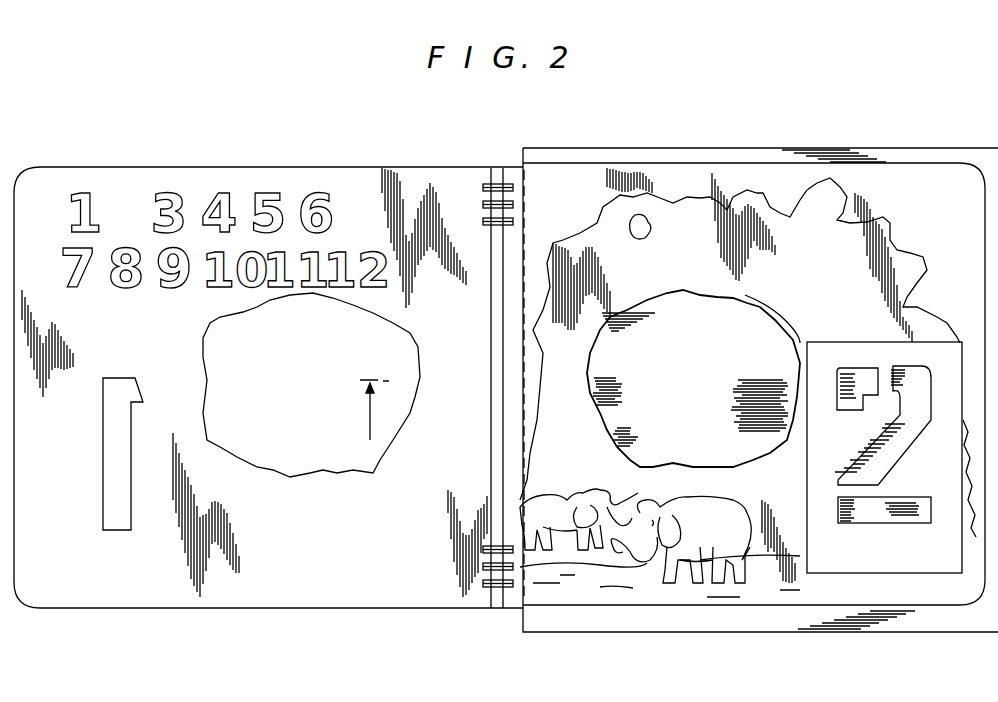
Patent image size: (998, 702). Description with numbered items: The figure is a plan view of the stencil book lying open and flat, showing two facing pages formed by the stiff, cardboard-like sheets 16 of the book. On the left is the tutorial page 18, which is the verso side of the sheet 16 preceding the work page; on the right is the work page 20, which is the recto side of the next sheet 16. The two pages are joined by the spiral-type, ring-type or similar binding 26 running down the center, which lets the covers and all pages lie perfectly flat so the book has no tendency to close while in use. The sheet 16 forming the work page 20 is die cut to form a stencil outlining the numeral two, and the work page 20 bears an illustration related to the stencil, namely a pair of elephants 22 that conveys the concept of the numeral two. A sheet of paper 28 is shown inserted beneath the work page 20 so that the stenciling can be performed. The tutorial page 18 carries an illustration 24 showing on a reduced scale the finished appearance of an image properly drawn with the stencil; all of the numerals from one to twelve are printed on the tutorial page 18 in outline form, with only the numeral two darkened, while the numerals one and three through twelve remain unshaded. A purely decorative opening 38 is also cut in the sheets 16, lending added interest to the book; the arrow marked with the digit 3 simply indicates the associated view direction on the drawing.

The sheets 16 is at (305, 167).
The tutorial page 18 is at (437, 168).
The work page 20 is at (665, 170).
The pair of elephants 22 is at (607, 472).
The illustration 24 is at (116, 194).
The binding 26 is at (503, 185).
The sheet of paper 28 is at (752, 151).
The decorative opening 38 is at (686, 300).
The arrow indicating direction 3 is at (370, 420).